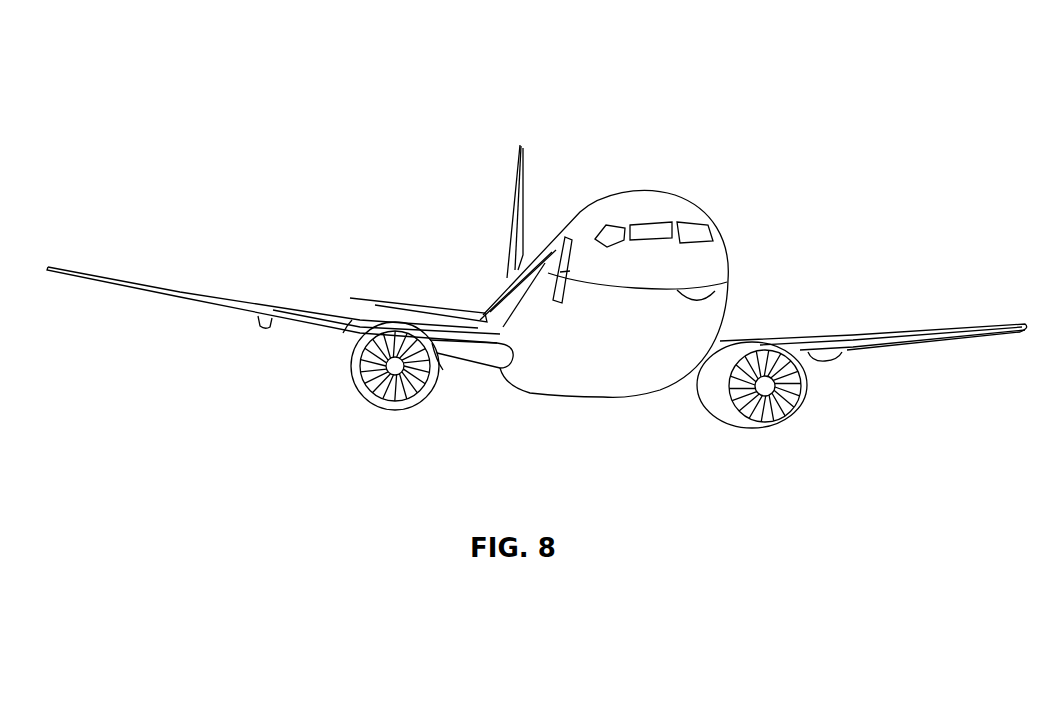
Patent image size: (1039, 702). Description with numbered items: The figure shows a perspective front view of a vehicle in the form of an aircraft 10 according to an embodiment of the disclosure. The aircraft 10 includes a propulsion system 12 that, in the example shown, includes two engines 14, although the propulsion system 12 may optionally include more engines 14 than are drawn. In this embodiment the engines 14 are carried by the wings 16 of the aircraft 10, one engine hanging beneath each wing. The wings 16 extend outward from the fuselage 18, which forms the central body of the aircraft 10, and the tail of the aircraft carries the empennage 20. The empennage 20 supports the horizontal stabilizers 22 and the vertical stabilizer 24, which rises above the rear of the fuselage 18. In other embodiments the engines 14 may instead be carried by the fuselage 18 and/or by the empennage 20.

The aircraft 10 is at (293, 93).
The propulsion system 12 is at (845, 422).
The engines 14 is at (385, 410).
The wings 16 is at (180, 291).
The fuselage 18 is at (731, 257).
The empennage 20 is at (505, 280).
The horizontal stabilizers 22 is at (388, 298).
The vertical stabilizer 24 is at (513, 183).